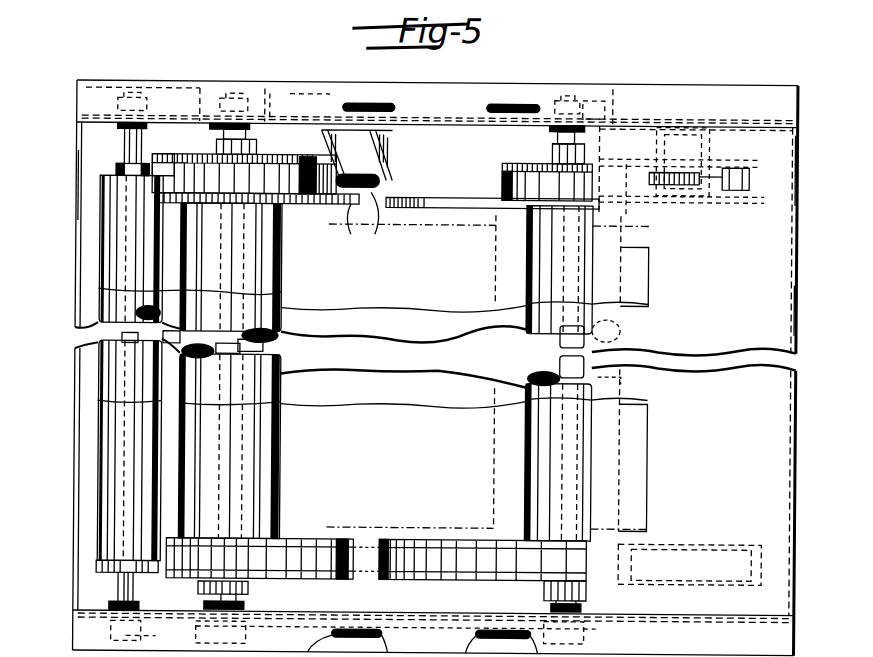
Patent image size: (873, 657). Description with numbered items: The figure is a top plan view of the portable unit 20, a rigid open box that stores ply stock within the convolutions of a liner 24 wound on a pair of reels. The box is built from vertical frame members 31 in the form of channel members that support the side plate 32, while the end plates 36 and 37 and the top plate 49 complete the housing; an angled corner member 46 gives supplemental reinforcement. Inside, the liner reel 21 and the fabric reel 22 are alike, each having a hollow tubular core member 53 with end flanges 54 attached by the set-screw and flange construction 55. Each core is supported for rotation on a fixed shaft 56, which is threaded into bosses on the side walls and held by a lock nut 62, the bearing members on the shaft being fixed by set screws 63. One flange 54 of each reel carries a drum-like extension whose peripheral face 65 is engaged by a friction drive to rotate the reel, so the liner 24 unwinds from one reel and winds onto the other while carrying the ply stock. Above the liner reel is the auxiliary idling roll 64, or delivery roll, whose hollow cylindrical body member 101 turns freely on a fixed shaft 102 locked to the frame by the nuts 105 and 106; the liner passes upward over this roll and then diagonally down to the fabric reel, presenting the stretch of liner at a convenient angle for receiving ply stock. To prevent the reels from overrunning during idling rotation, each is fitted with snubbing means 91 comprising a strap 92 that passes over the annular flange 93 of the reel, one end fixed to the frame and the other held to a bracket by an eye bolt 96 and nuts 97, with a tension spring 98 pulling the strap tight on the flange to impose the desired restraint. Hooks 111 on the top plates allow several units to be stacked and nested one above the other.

The portable unit 20 is at (708, 85).
The liner reel 21 is at (286, 246).
The fabric reel 22 is at (528, 261).
The liner 24 is at (650, 245).
The vertical frame members 31 is at (277, 92).
The side plate 32 is at (640, 122).
The end plate 36 is at (76, 186).
The end plate 37 is at (798, 158).
The angled corner member 46 is at (772, 314).
The top plate 49 is at (315, 58).
The hollow tubular core member 53 is at (286, 448).
The end flange 54 is at (312, 212).
The set-screw and flange construction 55 is at (232, 172).
The fixed shaft 56 is at (270, 350).
The lock nut 62 is at (208, 605).
The set screw 63 is at (265, 592).
The auxiliary idling roll 64 is at (100, 255).
The peripheral face 65 is at (392, 577).
The snubbing means 91 is at (378, 143).
The strap 92 is at (332, 165).
The annular flange 93 is at (535, 160).
The eye bolt 96 is at (400, 232).
The nuts 97 is at (380, 180).
The tension spring 98 is at (395, 205).
The hollow cylindrical body member 101 is at (100, 288).
The fixed shaft 102 is at (120, 336).
The nut 105 is at (118, 100).
The nut 106 is at (113, 605).
The hooks 111 is at (483, 104).